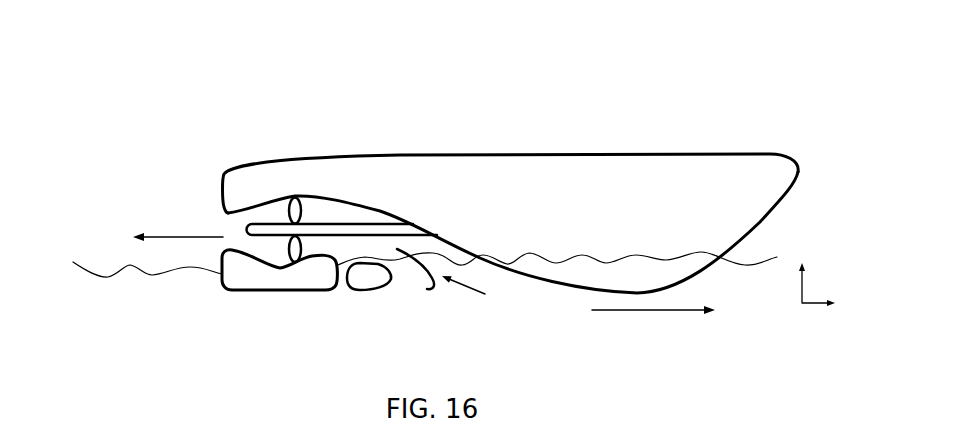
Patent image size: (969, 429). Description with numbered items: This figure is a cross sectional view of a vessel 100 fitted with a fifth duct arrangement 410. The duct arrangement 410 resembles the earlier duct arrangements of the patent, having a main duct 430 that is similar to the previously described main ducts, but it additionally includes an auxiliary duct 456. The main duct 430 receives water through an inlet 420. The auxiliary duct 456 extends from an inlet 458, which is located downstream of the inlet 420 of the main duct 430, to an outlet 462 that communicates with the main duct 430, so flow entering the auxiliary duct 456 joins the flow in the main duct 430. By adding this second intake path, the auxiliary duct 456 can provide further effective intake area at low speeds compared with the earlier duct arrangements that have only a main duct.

The vessel 100 is at (618, 101).
The fifth duct arrangement 410 is at (352, 194).
The inlet of the main duct 420 is at (415, 280).
The main duct 430 is at (426, 288).
The auxiliary duct 456 is at (334, 278).
The inlet of the auxiliary duct 458 is at (346, 266).
The outlet of the auxiliary duct 462 is at (346, 266).